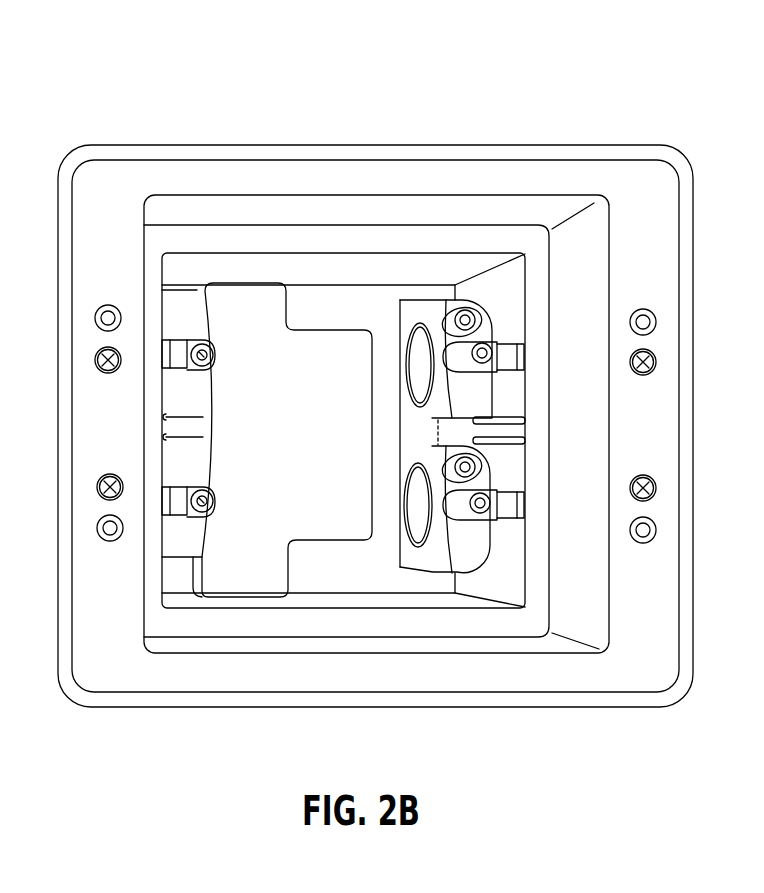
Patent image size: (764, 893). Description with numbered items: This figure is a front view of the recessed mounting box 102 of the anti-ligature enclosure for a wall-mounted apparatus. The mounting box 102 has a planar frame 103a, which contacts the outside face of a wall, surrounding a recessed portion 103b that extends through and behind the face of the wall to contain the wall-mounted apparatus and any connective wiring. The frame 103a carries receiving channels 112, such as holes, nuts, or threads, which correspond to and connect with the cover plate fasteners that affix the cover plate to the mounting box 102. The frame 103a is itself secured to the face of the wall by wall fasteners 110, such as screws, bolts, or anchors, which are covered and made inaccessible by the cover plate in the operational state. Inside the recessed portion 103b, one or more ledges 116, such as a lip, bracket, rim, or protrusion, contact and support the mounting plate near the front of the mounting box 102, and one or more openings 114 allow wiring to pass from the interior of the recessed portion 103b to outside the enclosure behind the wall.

The mounting box 102 is at (359, 402).
The frame 103a is at (396, 482).
The recessed portion 103b is at (247, 310).
The wall fasteners 110 is at (383, 415).
The receiving channels 112 is at (383, 412).
The openings 114 is at (411, 501).
The ledges 116 is at (373, 245).